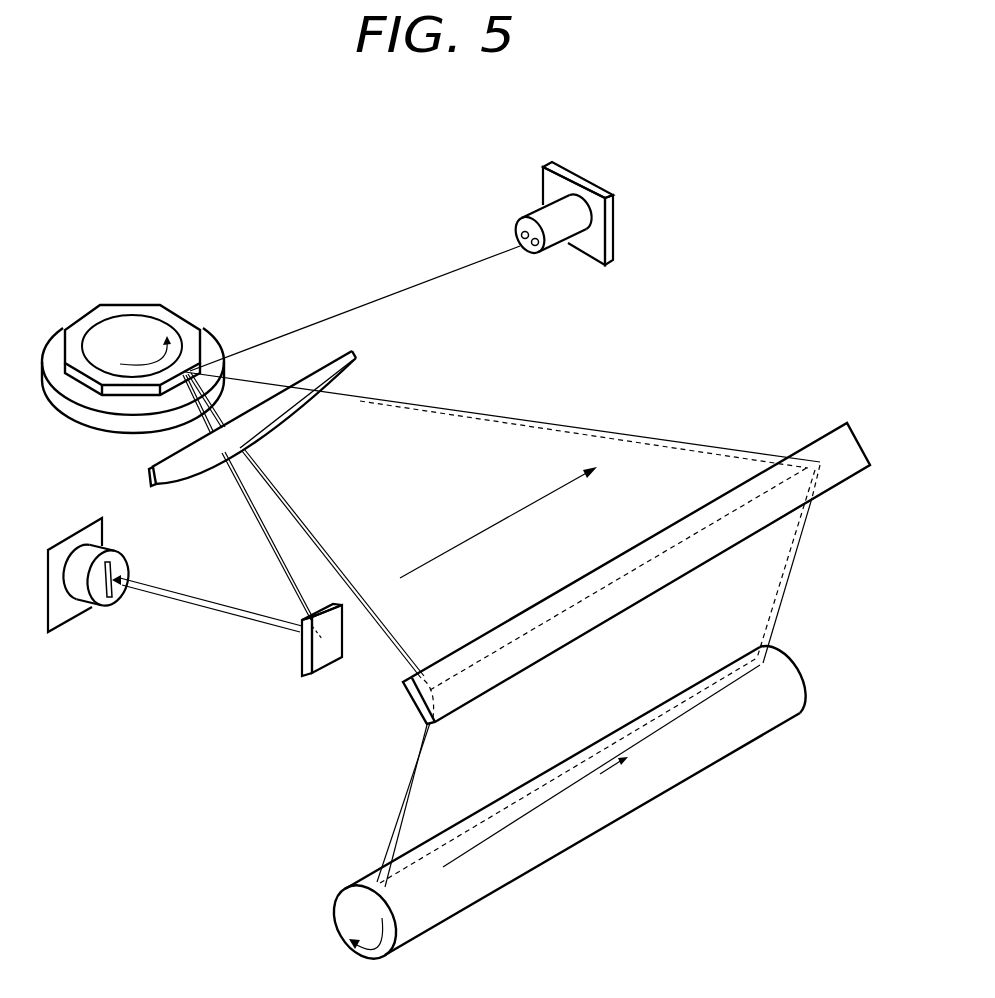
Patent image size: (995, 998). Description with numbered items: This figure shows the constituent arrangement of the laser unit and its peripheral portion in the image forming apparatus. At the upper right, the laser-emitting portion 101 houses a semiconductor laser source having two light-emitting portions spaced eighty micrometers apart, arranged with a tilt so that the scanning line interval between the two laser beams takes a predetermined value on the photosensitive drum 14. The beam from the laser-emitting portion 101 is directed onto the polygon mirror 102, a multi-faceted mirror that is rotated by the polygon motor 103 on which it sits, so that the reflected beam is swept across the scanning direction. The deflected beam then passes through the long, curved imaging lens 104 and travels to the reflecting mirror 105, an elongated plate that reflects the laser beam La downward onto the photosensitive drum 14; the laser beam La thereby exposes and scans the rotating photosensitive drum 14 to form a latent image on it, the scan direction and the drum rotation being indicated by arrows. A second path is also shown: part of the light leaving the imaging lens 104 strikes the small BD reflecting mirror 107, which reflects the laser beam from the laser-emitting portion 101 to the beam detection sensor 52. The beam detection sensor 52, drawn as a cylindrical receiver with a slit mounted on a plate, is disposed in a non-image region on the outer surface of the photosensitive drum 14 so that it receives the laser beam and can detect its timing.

The laser-emitting portion 101 is at (588, 185).
The polygon mirror 102 is at (127, 328).
The polygon motor 103 is at (85, 415).
The imaging lens 104 is at (355, 368).
The reflecting mirror 105 is at (820, 450).
The BD reflecting mirror 107 is at (323, 658).
The beam detection sensor 52 is at (63, 608).
The photosensitive drum 14 is at (597, 812).
The laser beam La is at (790, 587).